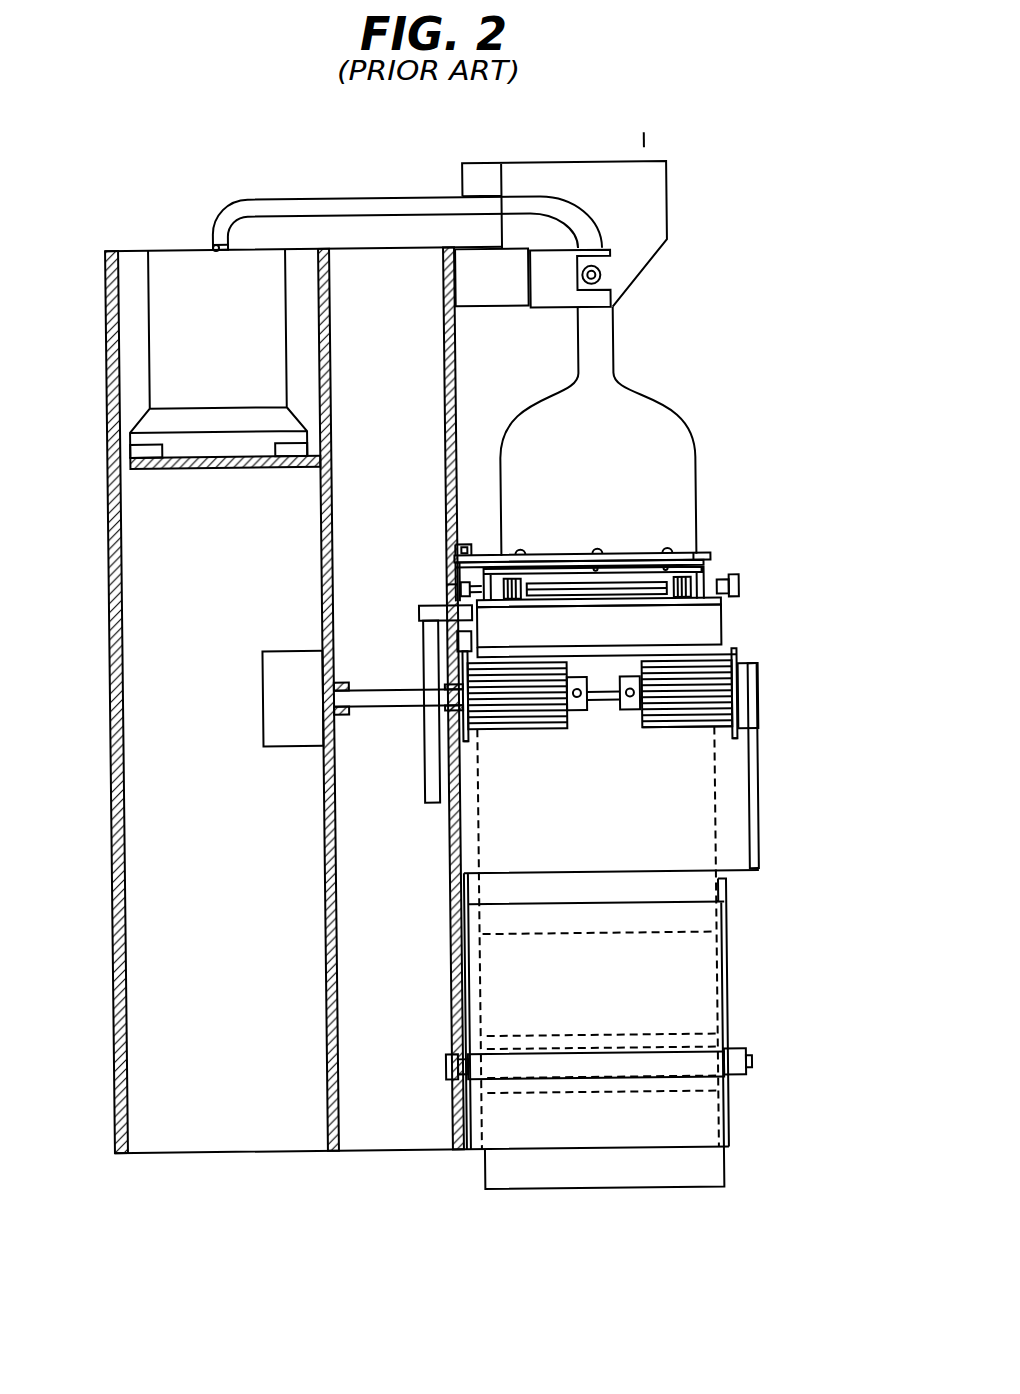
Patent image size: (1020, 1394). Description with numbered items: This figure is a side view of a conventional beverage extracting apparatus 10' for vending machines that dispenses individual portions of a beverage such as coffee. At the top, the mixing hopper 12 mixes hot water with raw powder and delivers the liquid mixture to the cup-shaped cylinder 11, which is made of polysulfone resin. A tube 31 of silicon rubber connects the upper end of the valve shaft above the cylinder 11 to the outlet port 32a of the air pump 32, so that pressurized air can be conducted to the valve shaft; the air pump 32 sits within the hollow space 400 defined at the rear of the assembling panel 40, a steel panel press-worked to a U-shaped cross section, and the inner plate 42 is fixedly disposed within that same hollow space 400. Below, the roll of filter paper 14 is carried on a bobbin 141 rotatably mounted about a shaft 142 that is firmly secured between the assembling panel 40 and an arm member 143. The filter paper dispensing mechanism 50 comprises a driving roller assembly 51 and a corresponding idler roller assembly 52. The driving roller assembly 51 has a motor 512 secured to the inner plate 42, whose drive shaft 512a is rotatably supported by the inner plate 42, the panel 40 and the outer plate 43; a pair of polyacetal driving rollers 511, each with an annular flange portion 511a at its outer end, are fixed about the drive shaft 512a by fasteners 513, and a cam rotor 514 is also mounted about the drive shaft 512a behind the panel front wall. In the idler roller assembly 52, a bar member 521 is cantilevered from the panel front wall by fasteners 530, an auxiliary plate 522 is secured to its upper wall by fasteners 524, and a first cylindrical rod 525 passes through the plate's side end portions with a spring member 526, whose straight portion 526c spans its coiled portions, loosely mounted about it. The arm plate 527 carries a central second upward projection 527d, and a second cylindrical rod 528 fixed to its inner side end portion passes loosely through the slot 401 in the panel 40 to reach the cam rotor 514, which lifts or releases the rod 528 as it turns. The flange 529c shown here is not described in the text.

The beverage extracting apparatus 10' is at (663, 117).
The cup-shaped cylinder 11 is at (668, 405).
The mixing hopper 12 is at (672, 207).
The filter paper 14 is at (611, 664).
The tube 31 is at (362, 200).
The air pump 32 is at (158, 331).
The outlet port 32a is at (218, 244).
The assembling panel 40 is at (455, 372).
The inner plate 42 is at (328, 1020).
The outer plate 43 is at (752, 797).
The filter paper dispensing mechanism 50 is at (745, 652).
The driving roller assembly 51 is at (695, 737).
The idler roller assembly 52 is at (735, 602).
The hollow space 400 is at (243, 908).
The slot 401 is at (446, 597).
The driving rollers 511 is at (520, 718).
The annular flange portion 511a is at (467, 760).
The motor 512 is at (263, 733).
The drive shaft 512a is at (393, 695).
The fasteners 513 is at (577, 678).
The cam rotor 514 is at (430, 778).
The bar member 521 is at (708, 555).
The auxiliary plate 522 is at (724, 573).
The fasteners 524 is at (522, 554).
The first cylindrical rod 525 is at (472, 548).
The spring member 526 is at (514, 604).
The straight portion 526c is at (578, 588).
The arm plate 527 is at (718, 620).
The second upward projection 527d is at (634, 592).
The second cylindrical rod 528 is at (420, 612).
The flange 529c is at (465, 652).
The fasteners 530 is at (466, 548).
The bobbin 141 is at (589, 1086).
The shaft 142 is at (666, 1066).
The arm member 143 is at (748, 1080).